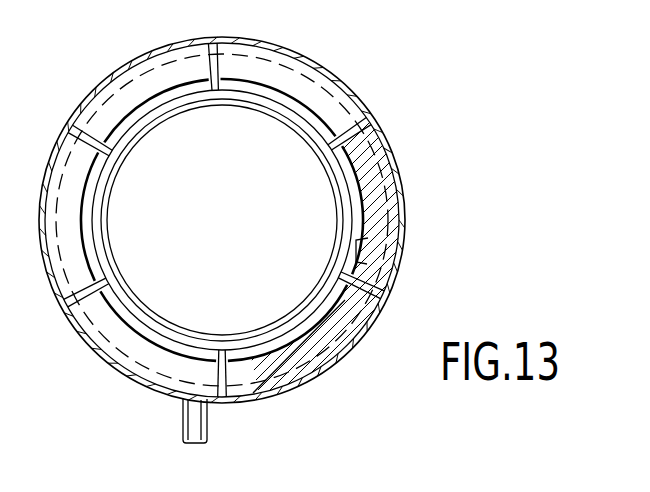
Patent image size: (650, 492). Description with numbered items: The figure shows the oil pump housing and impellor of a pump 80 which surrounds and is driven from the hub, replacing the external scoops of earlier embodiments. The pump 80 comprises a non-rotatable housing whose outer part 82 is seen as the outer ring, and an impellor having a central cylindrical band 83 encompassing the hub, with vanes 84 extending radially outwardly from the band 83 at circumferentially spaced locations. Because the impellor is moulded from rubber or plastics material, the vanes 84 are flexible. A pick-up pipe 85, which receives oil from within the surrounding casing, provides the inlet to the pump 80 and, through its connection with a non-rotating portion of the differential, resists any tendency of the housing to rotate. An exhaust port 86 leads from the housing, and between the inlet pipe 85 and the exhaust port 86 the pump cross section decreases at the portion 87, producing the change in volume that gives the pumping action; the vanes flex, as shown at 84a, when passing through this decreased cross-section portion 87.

The pump 80 is at (142, 93).
The outer part of pump housing 82 is at (158, 50).
The central cylindrical band 83 is at (158, 108).
The vanes 84 is at (218, 70).
The flexed pump vane 84a is at (350, 282).
The pick-up pipe 85 is at (180, 414).
The exhaust port 86 is at (368, 238).
The decreased cross-section portion 87 is at (320, 323).